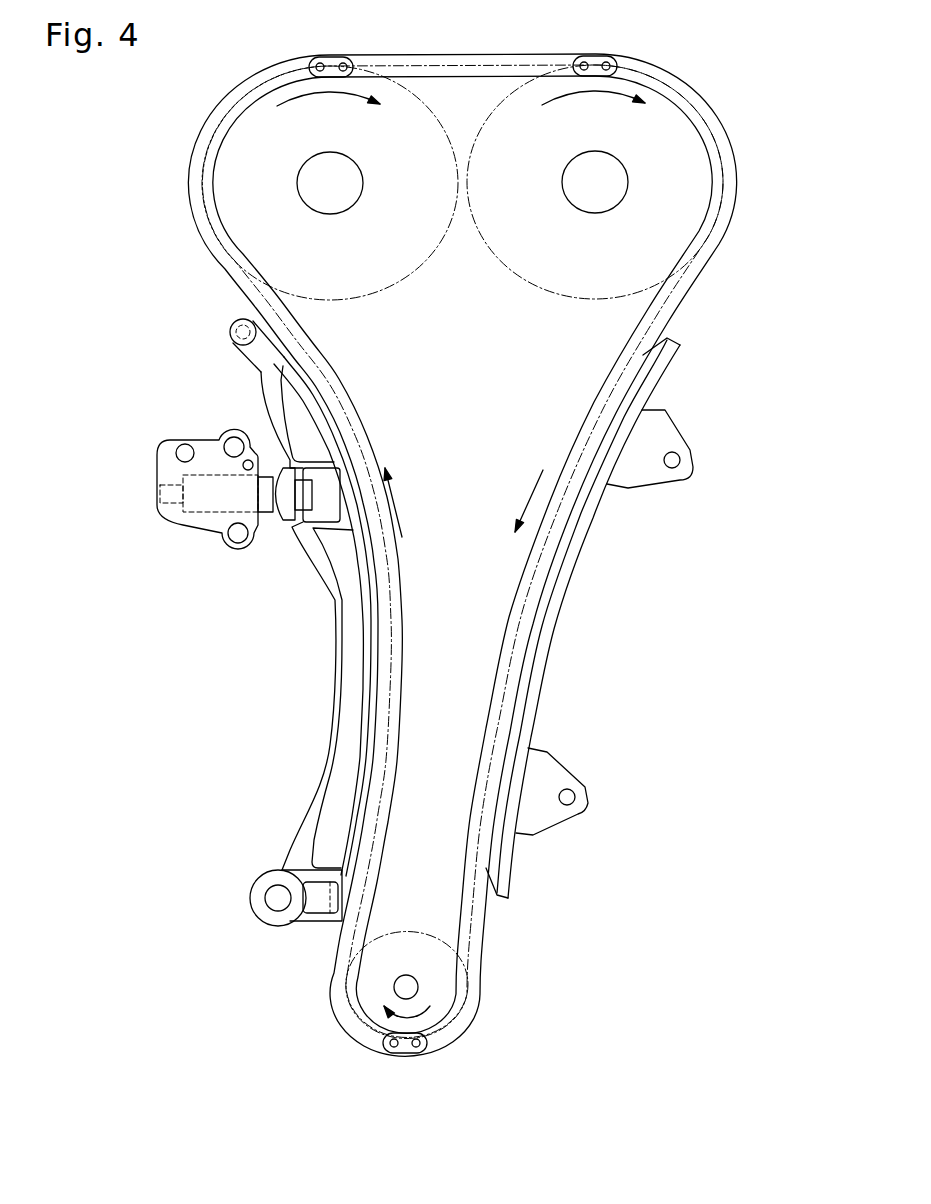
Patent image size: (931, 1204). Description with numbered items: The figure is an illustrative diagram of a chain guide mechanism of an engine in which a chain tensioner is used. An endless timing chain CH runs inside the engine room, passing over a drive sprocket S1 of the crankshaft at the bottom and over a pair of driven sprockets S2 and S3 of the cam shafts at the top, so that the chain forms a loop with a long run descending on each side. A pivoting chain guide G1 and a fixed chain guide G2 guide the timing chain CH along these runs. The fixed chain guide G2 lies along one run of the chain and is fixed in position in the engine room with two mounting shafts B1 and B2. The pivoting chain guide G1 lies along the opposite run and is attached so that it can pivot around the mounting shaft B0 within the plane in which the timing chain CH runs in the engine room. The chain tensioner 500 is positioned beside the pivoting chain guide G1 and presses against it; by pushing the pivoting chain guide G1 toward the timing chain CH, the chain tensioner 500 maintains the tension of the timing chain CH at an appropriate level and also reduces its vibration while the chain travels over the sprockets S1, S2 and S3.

The timing chain CH is at (668, 300).
The drive sprocket S1 is at (440, 986).
The driven sprocket S2 is at (245, 176).
The driven sprocket S3 is at (662, 168).
The pivoting chain guide G1 is at (274, 622).
The fixed chain guide G2 is at (627, 618).
The mounting shaft B0 is at (262, 898).
The mounting shaft B1 is at (680, 460).
The mounting shaft B2 is at (575, 797).
The chain tensioner 500 is at (168, 453).